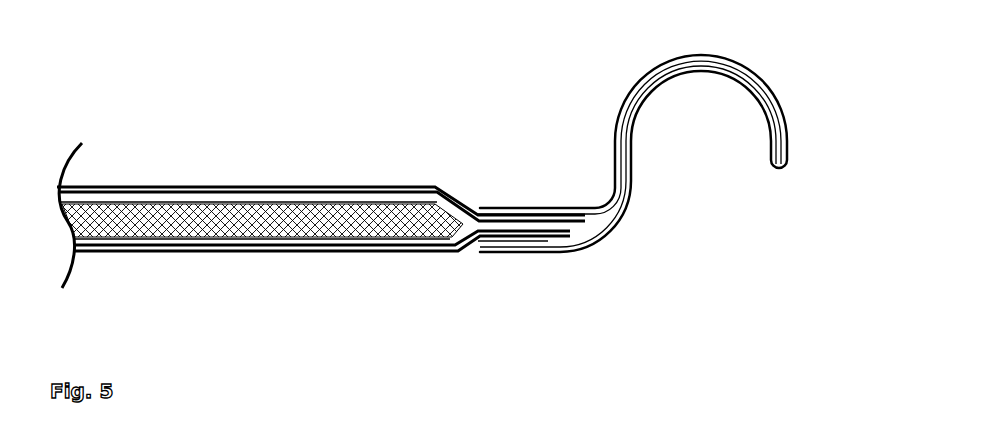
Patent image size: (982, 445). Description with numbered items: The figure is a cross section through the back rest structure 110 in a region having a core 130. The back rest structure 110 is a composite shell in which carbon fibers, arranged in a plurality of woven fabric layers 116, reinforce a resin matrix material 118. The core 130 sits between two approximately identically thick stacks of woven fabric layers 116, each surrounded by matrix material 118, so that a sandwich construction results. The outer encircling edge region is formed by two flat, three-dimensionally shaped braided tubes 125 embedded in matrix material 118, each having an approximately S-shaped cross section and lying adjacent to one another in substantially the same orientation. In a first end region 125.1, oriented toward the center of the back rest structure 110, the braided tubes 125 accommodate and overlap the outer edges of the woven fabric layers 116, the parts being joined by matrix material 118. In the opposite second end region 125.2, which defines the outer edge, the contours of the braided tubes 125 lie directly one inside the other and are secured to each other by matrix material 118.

The back rest structure 110 is at (222, 187).
The woven fabric layers 116 is at (292, 185).
The matrix material 118 is at (82, 200).
The braided tubes 125 is at (623, 98).
The first end region 125.1 is at (503, 272).
The second end region 125.2 is at (792, 72).
The core 130 is at (177, 228).